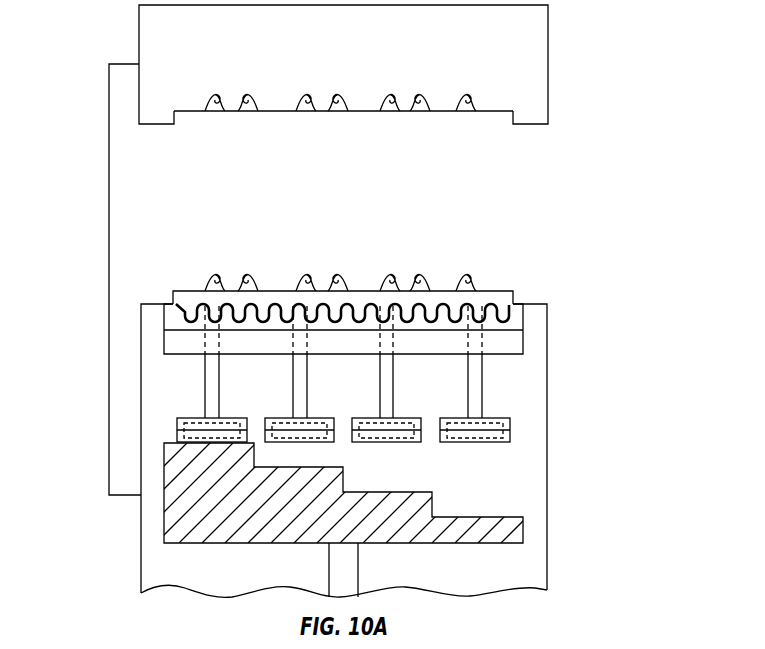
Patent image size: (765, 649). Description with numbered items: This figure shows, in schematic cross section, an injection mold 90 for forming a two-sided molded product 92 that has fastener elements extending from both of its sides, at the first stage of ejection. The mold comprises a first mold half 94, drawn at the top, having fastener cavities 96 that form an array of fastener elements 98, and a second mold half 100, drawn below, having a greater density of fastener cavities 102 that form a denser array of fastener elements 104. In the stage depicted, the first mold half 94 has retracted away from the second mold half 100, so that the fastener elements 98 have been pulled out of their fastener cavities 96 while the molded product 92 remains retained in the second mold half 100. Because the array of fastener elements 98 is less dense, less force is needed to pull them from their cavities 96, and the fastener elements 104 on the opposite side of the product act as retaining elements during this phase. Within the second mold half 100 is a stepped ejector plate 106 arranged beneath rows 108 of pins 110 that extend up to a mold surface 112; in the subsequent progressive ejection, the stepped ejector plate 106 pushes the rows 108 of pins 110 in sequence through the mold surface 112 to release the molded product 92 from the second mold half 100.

The injection mold 90 is at (645, 120).
The two-sided molded product 92 is at (379, 286).
The first mold half 94 is at (375, 64).
The fastener cavities 96 is at (350, 91).
The fastener elements 98 is at (366, 272).
The second mold half 100 is at (382, 450).
The fastener cavities 102 is at (393, 329).
The fastener elements 104 is at (187, 318).
The stepped ejector plate 106 is at (345, 520).
The rows of pins 108 is at (192, 388).
The pins 110 is at (414, 364).
The mold surface 112 is at (94, 279).